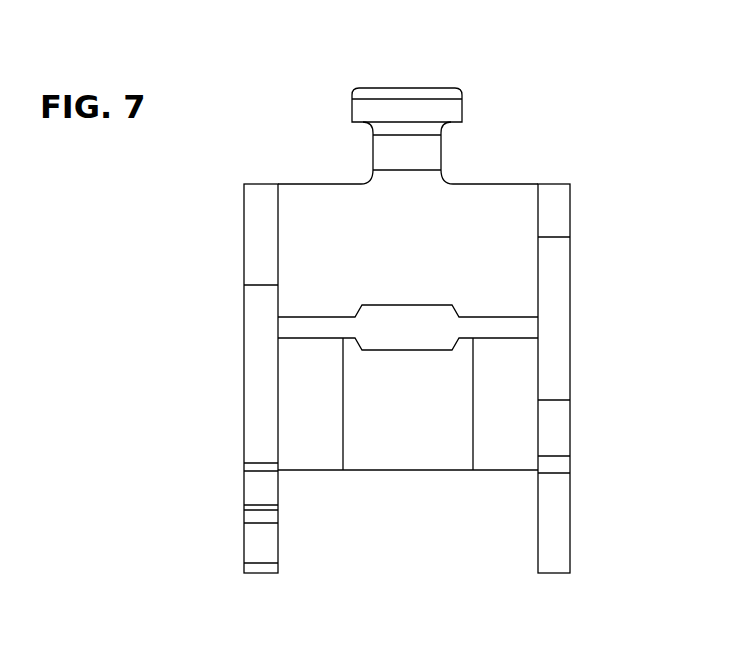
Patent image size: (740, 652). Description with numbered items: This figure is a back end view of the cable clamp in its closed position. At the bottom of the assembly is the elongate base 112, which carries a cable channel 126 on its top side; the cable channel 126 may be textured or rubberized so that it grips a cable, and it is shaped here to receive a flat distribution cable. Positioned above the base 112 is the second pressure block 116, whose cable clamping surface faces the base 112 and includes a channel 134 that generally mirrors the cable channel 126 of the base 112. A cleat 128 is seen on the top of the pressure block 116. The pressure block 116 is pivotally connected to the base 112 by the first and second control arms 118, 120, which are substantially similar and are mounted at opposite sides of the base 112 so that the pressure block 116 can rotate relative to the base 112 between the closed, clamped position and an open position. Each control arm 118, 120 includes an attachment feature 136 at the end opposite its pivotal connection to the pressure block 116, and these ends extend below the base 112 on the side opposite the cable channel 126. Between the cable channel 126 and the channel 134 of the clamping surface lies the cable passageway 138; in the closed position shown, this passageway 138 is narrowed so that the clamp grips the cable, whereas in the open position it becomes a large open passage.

The elongate base 112 is at (523, 411).
The second pressure block 116 is at (495, 243).
The first control arm 118 is at (559, 316).
The second control arm 120 is at (256, 367).
The cable channel 126 is at (427, 345).
The cleat 128 is at (409, 107).
The channel 134 is at (423, 307).
The attachment feature 136 is at (242, 574).
The cable passageway 138 is at (398, 327).